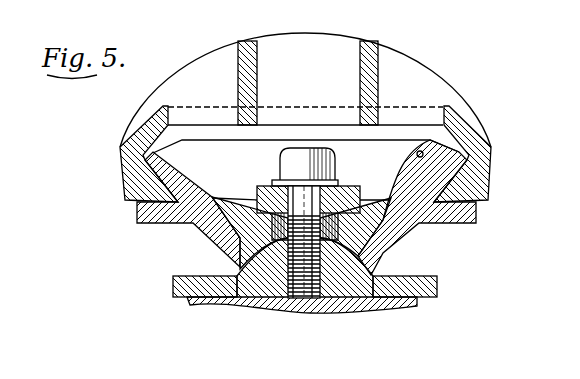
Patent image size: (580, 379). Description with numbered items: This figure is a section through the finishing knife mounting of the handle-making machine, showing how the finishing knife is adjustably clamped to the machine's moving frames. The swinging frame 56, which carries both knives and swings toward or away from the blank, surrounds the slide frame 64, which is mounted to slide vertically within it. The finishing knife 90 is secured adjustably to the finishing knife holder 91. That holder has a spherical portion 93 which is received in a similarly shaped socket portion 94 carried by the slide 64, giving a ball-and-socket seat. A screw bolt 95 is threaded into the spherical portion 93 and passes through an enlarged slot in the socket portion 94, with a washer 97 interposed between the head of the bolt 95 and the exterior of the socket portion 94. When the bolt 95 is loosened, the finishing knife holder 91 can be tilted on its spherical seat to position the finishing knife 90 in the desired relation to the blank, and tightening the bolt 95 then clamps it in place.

The swinging frame 56 is at (137, 110).
The slide frame 64 is at (200, 186).
The finishing knife 90 is at (347, 312).
The finishing knife holder 91 is at (438, 281).
The spherical portion 93 is at (367, 272).
The socket portion 94 is at (273, 237).
The screw bolt 95 is at (318, 202).
The washer 97 is at (258, 188).